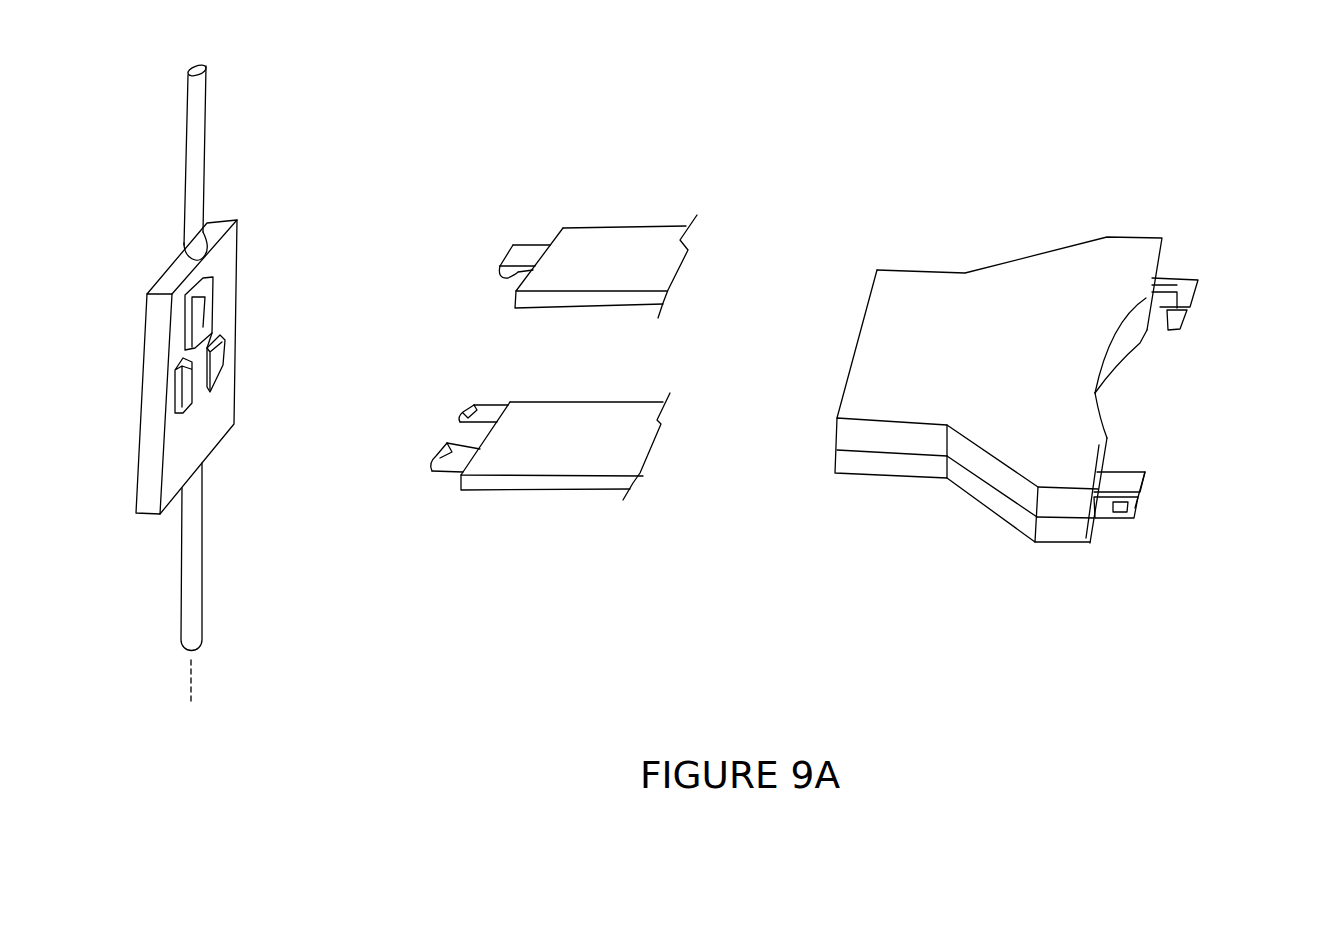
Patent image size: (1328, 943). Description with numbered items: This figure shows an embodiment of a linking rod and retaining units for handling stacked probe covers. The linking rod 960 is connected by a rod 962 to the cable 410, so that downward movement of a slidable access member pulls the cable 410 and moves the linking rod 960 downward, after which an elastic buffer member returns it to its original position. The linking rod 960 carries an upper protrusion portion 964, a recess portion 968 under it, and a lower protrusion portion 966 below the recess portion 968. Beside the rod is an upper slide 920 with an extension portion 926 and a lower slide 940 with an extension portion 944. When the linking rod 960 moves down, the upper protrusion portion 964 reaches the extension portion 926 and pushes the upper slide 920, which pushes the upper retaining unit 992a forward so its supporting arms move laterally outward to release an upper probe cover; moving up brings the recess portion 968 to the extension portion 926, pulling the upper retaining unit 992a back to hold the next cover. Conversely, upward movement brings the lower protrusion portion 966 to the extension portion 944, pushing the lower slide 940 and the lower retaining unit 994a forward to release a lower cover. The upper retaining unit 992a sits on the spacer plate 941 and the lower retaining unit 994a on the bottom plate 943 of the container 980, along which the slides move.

The linking rod 960 is at (235, 441).
The rod 962 is at (208, 100).
The upper protrusion portion 964 is at (216, 292).
The recess portion 968 is at (218, 326).
The lower protrusion portion 966 is at (226, 356).
The cable 410 is at (195, 700).
The upper slide 920 is at (594, 221).
The extension portion 926 is at (504, 265).
The lower slide 940 is at (540, 473).
The extension portion 944 is at (466, 405).
The container 980 is at (1071, 444).
The spacer plate 941 is at (879, 490).
The bottom plate 943 is at (967, 497).
The upper retaining unit 992a is at (1186, 274).
The lower retaining unit 994a is at (1188, 323).